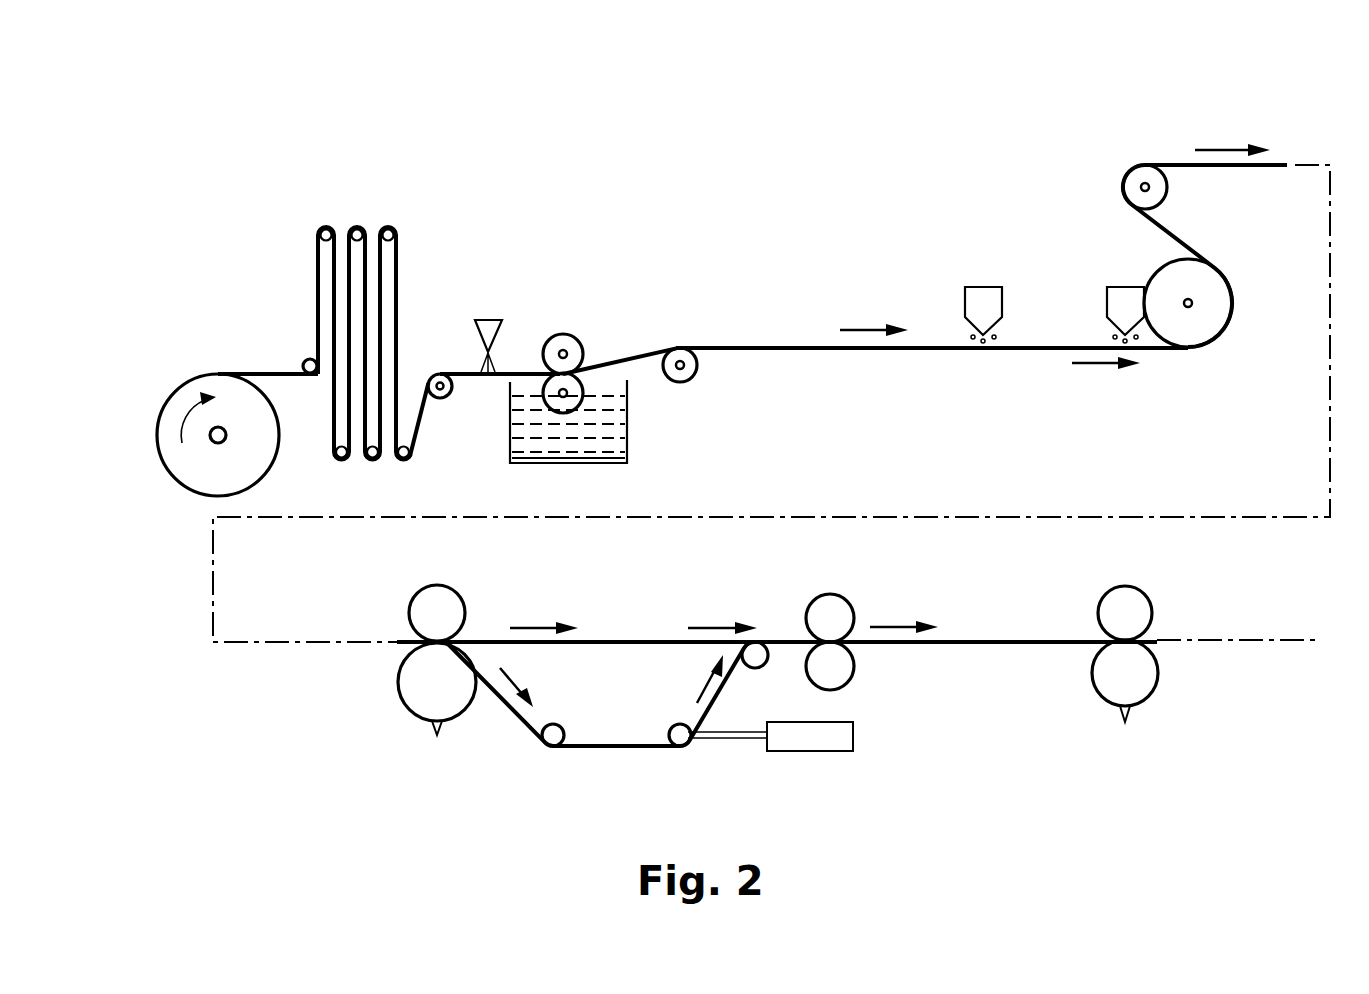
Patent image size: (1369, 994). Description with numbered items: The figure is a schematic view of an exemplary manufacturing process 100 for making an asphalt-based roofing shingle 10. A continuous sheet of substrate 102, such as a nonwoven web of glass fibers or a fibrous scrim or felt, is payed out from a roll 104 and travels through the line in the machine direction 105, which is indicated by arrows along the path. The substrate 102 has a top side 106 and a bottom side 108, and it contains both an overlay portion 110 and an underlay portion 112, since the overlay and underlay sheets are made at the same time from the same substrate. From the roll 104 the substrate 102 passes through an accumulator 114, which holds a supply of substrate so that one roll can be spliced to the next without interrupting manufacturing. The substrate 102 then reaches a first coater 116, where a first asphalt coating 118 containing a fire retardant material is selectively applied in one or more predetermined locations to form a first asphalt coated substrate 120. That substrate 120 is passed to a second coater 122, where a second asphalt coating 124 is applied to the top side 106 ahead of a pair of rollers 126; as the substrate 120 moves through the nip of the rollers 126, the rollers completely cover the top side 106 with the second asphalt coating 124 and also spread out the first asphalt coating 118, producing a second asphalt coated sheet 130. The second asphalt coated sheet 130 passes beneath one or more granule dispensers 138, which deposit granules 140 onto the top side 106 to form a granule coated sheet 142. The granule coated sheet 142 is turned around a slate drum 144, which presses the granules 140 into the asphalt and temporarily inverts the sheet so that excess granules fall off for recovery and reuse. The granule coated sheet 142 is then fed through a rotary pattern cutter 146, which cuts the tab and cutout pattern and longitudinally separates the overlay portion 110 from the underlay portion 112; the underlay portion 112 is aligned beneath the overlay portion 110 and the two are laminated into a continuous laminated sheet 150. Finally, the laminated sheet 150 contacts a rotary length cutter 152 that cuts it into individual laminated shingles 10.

The manufacturing process 100 is at (262, 176).
The substrate 102 is at (232, 345).
The roll 104 is at (182, 457).
The top side 106 is at (265, 372).
The bottom side 108 is at (288, 378).
The overlay portion 110 is at (605, 640).
The underlay portion 112 is at (615, 750).
The accumulator 114 is at (415, 268).
The first coater 116 is at (488, 318).
The first asphalt coating 118 is at (482, 365).
The first asphalt coated substrate 120 is at (518, 373).
The second coater 122 is at (510, 407).
The second asphalt coating 124 is at (613, 428).
The pair of rollers 126 is at (578, 376).
The second asphalt coated sheet 130 is at (762, 347).
The machine direction 105 is at (850, 330).
The granule dispensers 138 is at (1107, 300).
The granules 140 is at (994, 343).
The granule coated sheet 142 is at (1180, 240).
The slate drum 144 is at (1198, 323).
The rotary pattern cutter 146 is at (395, 602).
The continuous laminated sheet 150 is at (778, 640).
The rotary length cutter 152 is at (1093, 687).
The roofing shingle 10 is at (1268, 640).